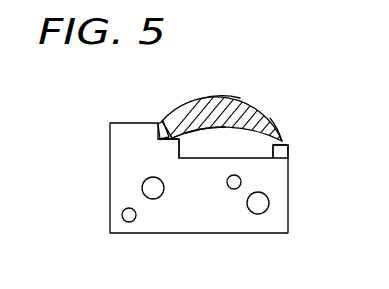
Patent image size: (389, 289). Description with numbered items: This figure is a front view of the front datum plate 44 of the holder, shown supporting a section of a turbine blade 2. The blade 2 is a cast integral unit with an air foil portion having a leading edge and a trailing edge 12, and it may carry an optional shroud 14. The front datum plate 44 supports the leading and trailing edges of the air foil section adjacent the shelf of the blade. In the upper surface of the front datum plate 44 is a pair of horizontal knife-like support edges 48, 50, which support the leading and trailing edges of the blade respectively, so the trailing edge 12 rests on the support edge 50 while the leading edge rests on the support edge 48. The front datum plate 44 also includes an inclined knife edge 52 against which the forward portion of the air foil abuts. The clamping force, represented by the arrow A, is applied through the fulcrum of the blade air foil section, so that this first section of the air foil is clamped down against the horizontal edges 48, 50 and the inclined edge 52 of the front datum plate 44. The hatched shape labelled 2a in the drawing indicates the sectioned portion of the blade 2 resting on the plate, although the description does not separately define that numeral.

The blade 2 is at (255, 106).
The lens edge portion 2a is at (163, 120).
The trailing edge 12 is at (282, 140).
The shroud 14 is at (188, 138).
The front datum plate 44 is at (195, 220).
The horizontal knife-like support edge 48 is at (173, 140).
The horizontal knife-like support edge 50 is at (290, 148).
The inclined knife edge 52 is at (161, 132).
The clamping force A is at (253, 50).